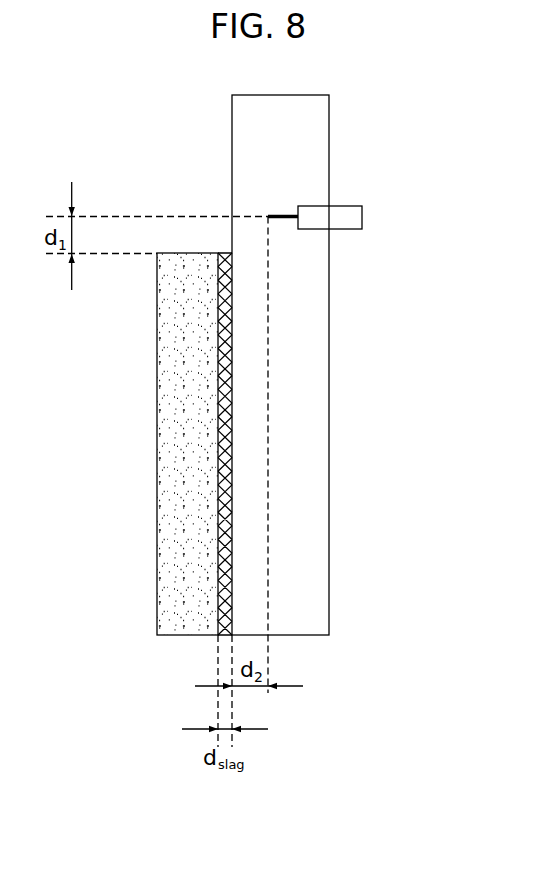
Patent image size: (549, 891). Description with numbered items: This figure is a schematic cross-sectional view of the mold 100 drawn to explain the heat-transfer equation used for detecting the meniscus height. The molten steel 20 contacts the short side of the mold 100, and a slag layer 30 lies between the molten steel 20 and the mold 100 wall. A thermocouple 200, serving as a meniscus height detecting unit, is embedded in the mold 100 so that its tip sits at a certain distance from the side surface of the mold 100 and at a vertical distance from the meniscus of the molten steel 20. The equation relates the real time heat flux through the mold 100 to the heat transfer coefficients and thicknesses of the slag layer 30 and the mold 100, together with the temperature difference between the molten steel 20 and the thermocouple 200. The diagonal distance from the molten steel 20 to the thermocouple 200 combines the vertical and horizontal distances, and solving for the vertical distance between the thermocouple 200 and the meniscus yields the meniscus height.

The mold 100 is at (329, 133).
The thermocouple 200 is at (362, 217).
The molten steel 20 is at (183, 370).
The slag layer 30 is at (232, 365).